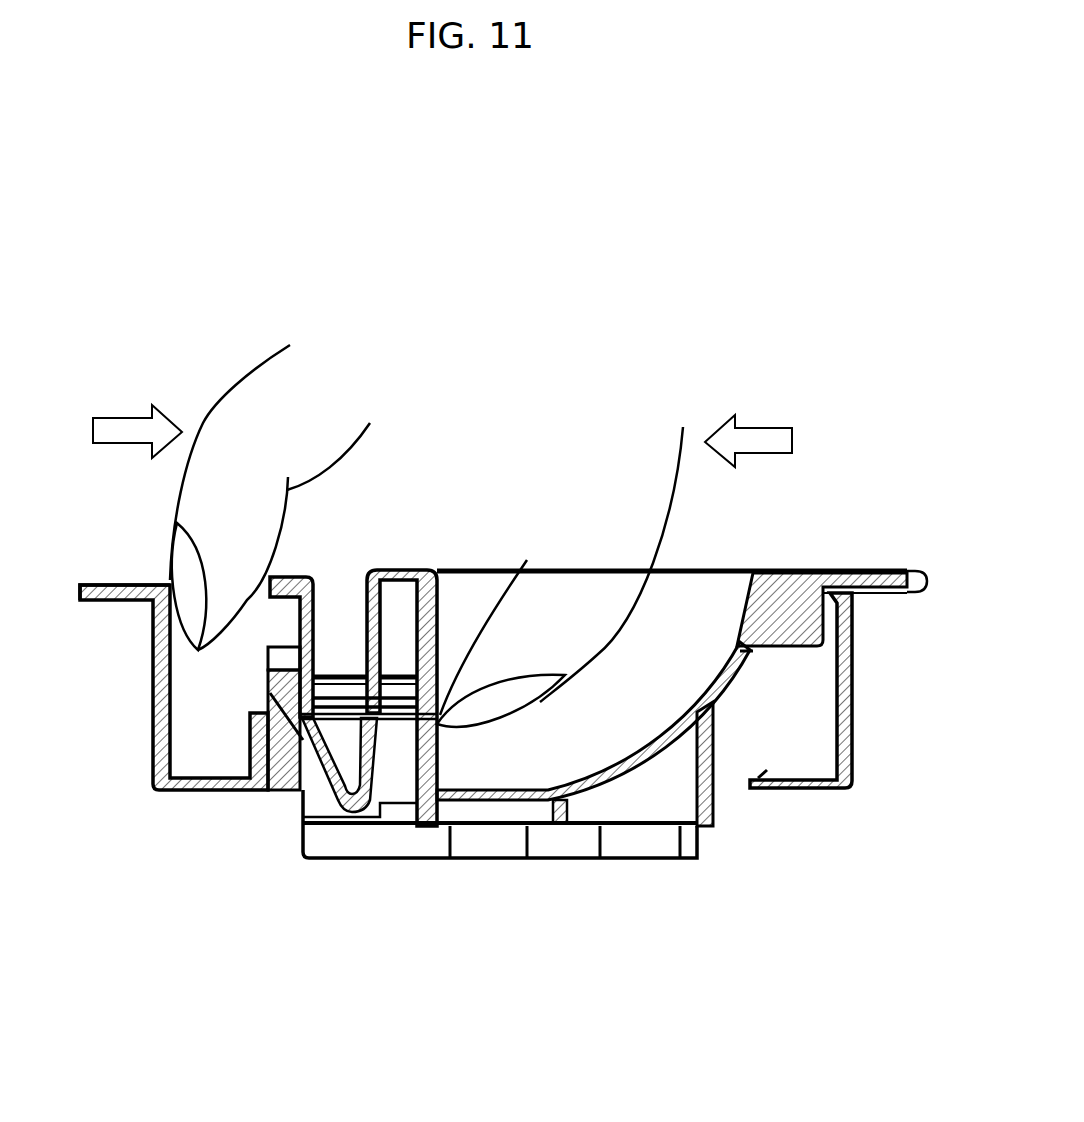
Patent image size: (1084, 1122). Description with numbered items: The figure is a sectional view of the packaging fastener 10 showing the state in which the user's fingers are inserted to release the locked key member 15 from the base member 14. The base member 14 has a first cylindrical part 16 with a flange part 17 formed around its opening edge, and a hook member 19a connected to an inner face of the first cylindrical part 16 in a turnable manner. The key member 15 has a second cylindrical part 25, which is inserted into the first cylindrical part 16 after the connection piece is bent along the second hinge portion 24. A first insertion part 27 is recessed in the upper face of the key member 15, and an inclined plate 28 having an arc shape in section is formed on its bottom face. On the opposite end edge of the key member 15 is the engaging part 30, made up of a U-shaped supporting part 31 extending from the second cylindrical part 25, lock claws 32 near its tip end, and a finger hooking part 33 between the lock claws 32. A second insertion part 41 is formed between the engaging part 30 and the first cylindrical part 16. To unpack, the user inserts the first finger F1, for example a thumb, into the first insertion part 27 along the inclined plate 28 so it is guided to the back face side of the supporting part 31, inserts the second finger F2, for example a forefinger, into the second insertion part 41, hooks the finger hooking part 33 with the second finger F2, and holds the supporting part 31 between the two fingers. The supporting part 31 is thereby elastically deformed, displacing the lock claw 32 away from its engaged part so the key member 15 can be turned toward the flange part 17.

The packaging fastener 10 is at (783, 522).
The base member 14 is at (153, 645).
The key member 15 is at (500, 812).
The first cylindrical part 16 is at (852, 715).
The flange part 17 is at (113, 583).
The hook member 19a is at (572, 847).
The second hinge portion 24 is at (925, 577).
The second cylindrical part 25 is at (713, 797).
The first insertion part 27 is at (457, 598).
The inclined plate 28 is at (628, 762).
The engaging part 30 is at (388, 643).
The supporting part 31 is at (308, 748).
The lock claw 32 is at (283, 672).
The finger hooking part 33 is at (270, 578).
The second insertion part 41 is at (213, 665).
The first finger F1 is at (590, 663).
The second finger F2 is at (237, 400).